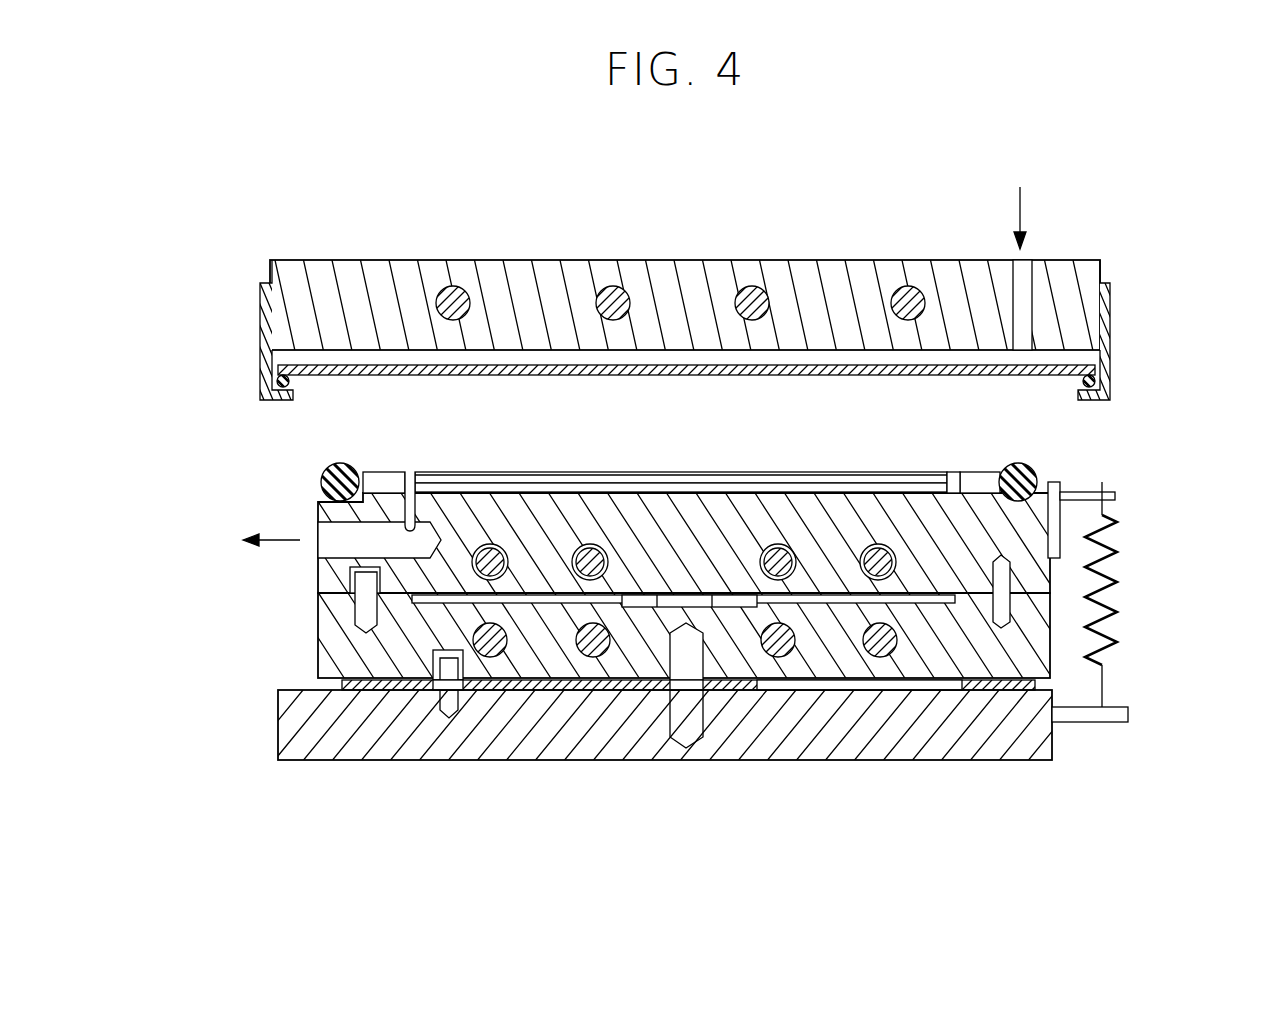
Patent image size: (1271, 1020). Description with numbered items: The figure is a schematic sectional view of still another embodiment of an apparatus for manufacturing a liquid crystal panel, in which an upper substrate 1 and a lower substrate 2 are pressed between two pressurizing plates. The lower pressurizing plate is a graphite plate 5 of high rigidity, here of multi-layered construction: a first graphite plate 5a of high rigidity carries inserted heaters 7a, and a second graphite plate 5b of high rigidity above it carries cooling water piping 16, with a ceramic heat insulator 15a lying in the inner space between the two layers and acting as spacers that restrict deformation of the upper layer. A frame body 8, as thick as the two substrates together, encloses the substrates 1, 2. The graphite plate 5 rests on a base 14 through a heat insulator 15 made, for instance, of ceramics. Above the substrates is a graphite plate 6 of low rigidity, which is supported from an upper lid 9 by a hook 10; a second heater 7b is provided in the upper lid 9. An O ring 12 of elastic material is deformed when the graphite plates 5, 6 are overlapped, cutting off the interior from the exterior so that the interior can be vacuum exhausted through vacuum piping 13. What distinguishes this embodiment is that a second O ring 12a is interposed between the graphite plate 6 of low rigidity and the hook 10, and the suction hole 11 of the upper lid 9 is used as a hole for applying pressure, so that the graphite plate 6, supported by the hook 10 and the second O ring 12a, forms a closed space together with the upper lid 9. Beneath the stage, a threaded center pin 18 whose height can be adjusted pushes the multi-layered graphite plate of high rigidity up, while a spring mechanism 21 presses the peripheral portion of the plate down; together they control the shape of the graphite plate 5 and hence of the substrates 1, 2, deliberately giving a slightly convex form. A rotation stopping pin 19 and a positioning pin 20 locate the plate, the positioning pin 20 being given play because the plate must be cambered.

The upper substrate 1 is at (795, 478).
The lower substrate 2 is at (880, 490).
The graphite plate of high rigidity 5 is at (633, 585).
The first graphite plate of high rigidity 5a is at (335, 628).
The second graphite plate of high rigidity 5b is at (325, 578).
The graphite plate of low rigidity 6 is at (686, 365).
The heater 7a is at (886, 643).
The second heater 7b is at (903, 300).
The frame body 8 is at (1012, 465).
The upper lid 9 is at (522, 287).
The hook 10 is at (262, 315).
The suction hole 11 is at (1022, 300).
The O ring 12 is at (325, 478).
The second O ring 12a is at (292, 385).
The vacuum piping 13 is at (330, 537).
The base 14 is at (290, 725).
The heat insulator 15 is at (343, 686).
The heat insulator 15a is at (638, 604).
The cooling water piping 16 is at (870, 585).
The center pin 18 is at (690, 706).
The rotation stopping pin 19 is at (378, 605).
The positioning pin 20 is at (1000, 606).
The spring mechanism 21 is at (1134, 590).